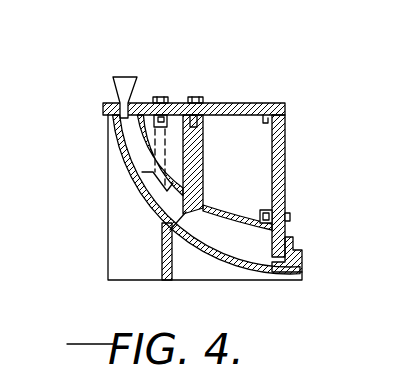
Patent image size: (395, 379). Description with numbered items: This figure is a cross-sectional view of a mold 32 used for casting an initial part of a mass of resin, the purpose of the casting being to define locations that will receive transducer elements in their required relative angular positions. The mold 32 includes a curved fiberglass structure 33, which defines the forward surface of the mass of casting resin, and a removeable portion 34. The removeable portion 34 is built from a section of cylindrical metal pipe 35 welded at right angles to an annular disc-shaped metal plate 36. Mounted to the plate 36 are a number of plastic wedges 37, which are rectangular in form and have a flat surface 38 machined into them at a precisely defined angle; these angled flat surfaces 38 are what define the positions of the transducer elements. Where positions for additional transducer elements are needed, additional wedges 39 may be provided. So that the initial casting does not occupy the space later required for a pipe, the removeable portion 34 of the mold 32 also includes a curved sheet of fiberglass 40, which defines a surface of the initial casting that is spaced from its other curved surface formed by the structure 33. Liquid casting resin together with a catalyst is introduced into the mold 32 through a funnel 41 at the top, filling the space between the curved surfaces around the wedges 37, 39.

The mold 32 is at (185, 86).
The curved fiberglass structure 33 is at (140, 203).
The removeable portion 34 is at (289, 142).
The section of cylindrical metal pipe 35 is at (282, 189).
The annular disc-shaped metal plate 36 is at (241, 103).
The plastic wedges 37 is at (198, 153).
The flat surface 38 is at (163, 228).
The additional wedges 39 is at (112, 163).
The curved sheet of fiberglass 40 is at (137, 137).
The funnel 41 is at (110, 88).